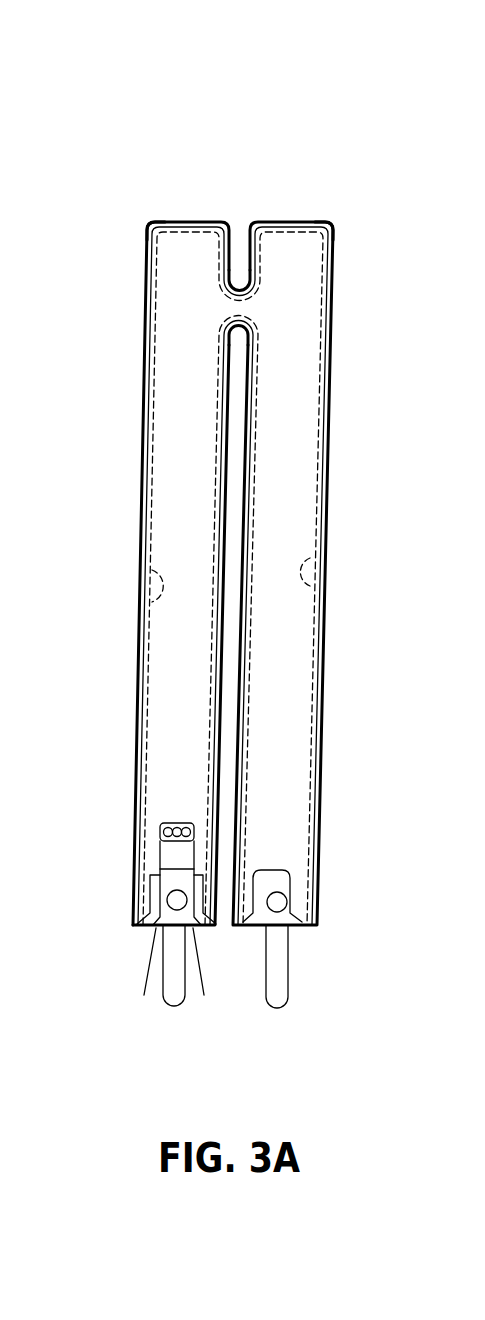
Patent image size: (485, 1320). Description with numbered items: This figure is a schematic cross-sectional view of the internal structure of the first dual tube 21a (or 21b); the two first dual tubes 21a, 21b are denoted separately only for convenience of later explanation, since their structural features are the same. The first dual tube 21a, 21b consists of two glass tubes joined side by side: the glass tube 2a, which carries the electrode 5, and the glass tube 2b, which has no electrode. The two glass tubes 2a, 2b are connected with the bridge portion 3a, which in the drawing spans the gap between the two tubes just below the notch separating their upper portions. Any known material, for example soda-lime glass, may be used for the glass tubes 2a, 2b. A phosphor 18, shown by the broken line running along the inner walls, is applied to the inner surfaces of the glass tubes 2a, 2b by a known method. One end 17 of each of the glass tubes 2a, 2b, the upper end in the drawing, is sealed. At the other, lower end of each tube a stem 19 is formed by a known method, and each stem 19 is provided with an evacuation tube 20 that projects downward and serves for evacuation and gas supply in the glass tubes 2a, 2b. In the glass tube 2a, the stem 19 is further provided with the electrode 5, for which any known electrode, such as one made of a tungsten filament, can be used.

The first dual tube 21a is at (233, 464).
The first dual tube 21b is at (233, 576).
The glass tube 2a is at (187, 422).
The glass tube 2b is at (298, 449).
The bridge portion 3a is at (230, 310).
The one end 17 is at (190, 221).
The phosphor 18 is at (150, 572).
The electrode 5 is at (175, 823).
The stem 19 is at (158, 868).
The evacuation tube 20 is at (168, 997).